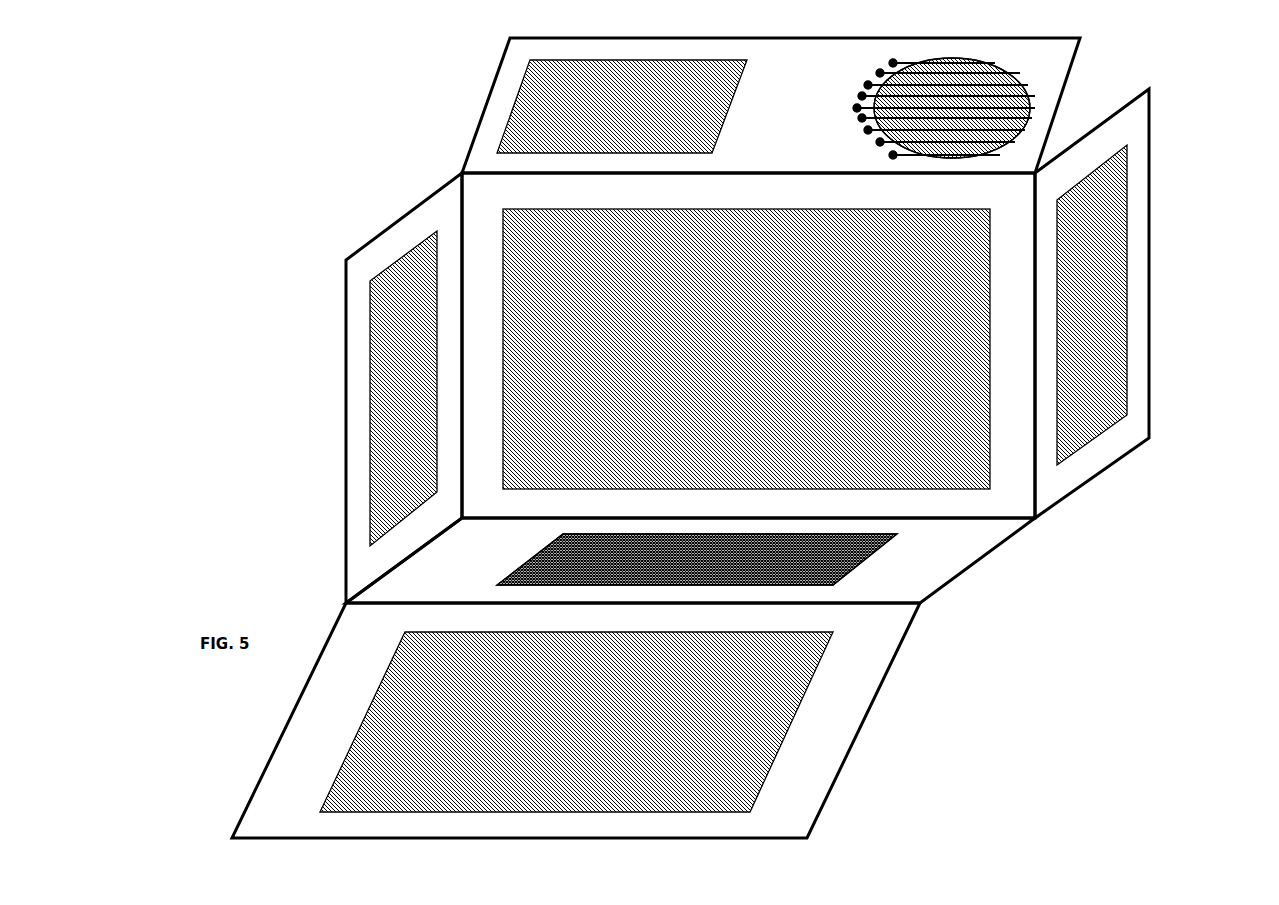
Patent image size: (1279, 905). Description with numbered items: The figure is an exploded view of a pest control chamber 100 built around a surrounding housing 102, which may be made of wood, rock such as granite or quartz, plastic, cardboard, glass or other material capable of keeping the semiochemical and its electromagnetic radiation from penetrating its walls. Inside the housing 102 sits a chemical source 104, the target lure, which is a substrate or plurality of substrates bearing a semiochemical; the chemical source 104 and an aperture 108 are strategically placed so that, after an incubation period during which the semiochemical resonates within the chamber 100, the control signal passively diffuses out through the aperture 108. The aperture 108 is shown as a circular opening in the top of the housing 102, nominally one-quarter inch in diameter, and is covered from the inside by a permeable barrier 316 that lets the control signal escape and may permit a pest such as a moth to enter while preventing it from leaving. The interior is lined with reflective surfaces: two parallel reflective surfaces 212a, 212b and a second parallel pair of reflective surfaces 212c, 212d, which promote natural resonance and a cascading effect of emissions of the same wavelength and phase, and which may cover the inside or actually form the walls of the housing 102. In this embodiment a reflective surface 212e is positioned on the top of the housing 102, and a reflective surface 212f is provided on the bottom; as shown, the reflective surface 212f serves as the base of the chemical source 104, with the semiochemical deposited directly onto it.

The chamber 100 is at (462, 125).
The housing 102 is at (317, 727).
The chemical source 104 is at (867, 565).
The aperture 108 is at (1022, 75).
The reflective surface 212a is at (385, 370).
The reflective surface 212b is at (1115, 202).
The reflective surface 212c is at (543, 245).
The reflective surface 212d is at (788, 682).
The reflective surface 212e is at (707, 117).
The reflective surface 212f is at (842, 583).
The permeable barrier 316 is at (888, 140).